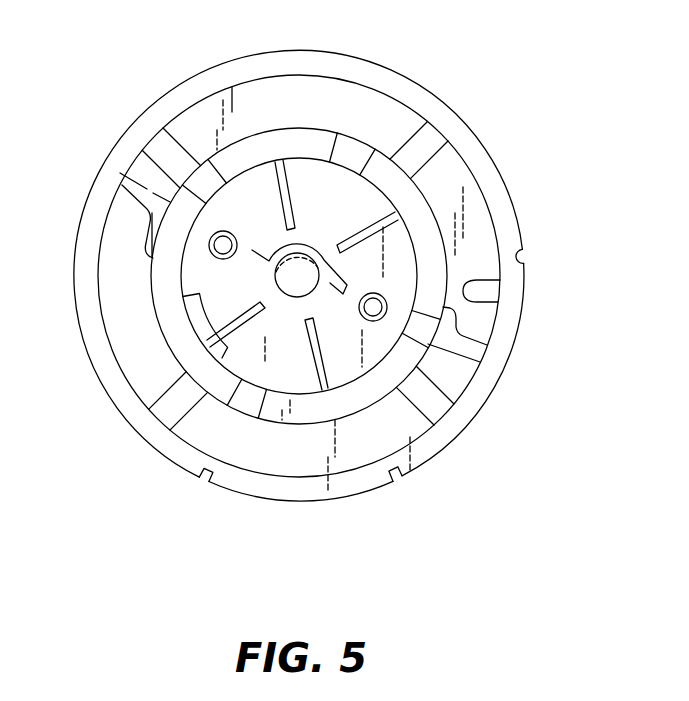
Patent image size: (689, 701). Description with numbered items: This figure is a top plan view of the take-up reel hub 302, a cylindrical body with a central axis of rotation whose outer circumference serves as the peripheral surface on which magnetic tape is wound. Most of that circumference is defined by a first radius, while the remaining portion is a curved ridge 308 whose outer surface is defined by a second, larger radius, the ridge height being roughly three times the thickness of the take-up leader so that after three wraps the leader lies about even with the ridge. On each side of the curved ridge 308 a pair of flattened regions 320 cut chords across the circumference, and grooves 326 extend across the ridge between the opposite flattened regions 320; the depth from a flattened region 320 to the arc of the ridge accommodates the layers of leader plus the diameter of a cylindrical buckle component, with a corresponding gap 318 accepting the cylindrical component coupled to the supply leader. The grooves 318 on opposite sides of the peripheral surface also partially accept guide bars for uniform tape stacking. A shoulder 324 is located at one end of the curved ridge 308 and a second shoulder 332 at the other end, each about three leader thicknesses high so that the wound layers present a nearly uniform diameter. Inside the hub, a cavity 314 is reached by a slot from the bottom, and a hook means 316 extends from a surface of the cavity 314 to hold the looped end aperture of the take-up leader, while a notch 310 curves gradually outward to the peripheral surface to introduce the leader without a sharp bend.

The hub 302 is at (447, 73).
The curved ridge 308 is at (282, 285).
The notch 310 is at (522, 262).
The cavity 314 is at (502, 335).
The hook means 316 is at (503, 298).
The grooves 318 is at (137, 158).
The flattened regions 320 is at (443, 455).
The shoulder 324 is at (150, 443).
The grooves 326 is at (349, 535).
The shoulder 332 is at (443, 448).